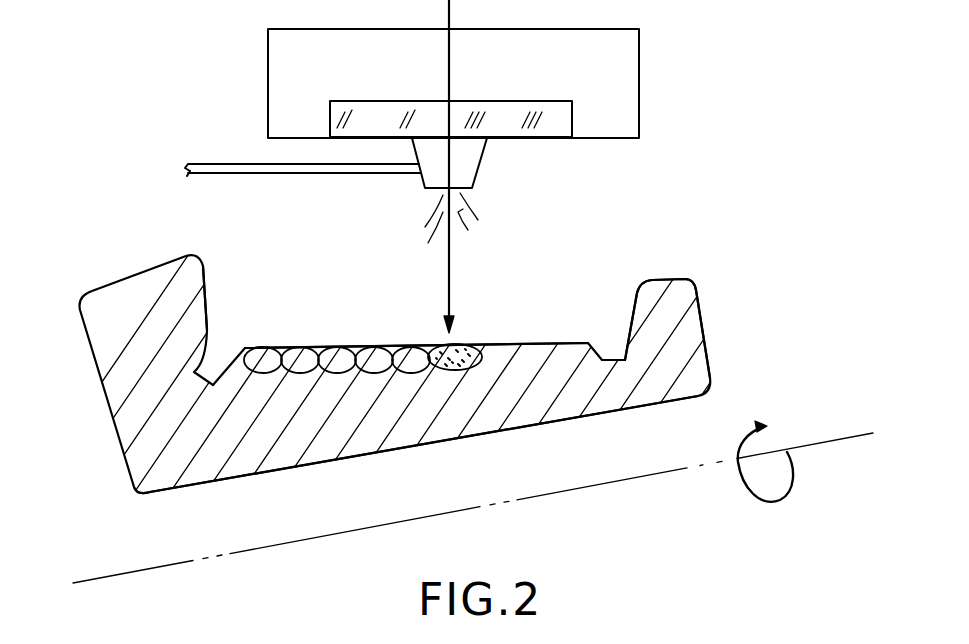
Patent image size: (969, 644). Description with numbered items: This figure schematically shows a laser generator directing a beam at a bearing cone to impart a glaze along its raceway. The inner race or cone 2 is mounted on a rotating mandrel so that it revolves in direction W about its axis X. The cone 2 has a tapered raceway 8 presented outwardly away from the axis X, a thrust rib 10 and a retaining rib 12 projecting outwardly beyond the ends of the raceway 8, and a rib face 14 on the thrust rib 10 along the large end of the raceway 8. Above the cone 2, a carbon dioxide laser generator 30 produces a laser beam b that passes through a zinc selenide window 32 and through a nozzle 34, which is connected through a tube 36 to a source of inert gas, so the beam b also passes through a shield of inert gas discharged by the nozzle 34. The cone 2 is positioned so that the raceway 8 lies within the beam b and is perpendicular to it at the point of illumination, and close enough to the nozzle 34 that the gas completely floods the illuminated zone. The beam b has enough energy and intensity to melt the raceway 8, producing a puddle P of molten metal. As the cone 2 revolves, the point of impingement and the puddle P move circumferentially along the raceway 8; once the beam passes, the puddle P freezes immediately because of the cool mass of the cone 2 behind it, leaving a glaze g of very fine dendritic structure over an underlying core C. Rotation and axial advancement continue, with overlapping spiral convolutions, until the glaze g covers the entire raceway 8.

The CO2 laser generator 30 is at (627, 72).
The zinc selenide window 32 is at (550, 122).
The nozzle 34 is at (468, 167).
The tube 36 is at (222, 163).
The thrust rib 10 is at (143, 268).
The retaining rib 12 is at (657, 280).
The rib face 14 is at (208, 285).
The tapered raceway 8 is at (547, 343).
The inner race or cone 2 is at (340, 463).
The core C is at (272, 475).
The glaze g is at (344, 352).
The laser beam b is at (452, 258).
The puddle P is at (463, 343).
The axis of rotation X is at (482, 503).
The rotation direction W is at (767, 458).